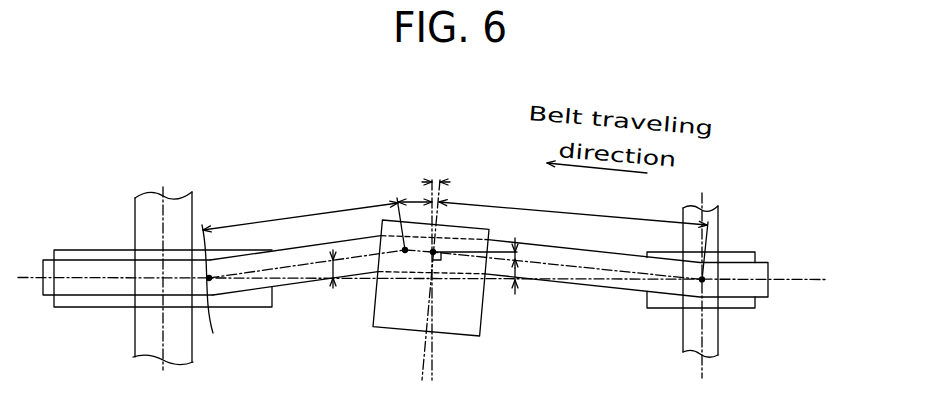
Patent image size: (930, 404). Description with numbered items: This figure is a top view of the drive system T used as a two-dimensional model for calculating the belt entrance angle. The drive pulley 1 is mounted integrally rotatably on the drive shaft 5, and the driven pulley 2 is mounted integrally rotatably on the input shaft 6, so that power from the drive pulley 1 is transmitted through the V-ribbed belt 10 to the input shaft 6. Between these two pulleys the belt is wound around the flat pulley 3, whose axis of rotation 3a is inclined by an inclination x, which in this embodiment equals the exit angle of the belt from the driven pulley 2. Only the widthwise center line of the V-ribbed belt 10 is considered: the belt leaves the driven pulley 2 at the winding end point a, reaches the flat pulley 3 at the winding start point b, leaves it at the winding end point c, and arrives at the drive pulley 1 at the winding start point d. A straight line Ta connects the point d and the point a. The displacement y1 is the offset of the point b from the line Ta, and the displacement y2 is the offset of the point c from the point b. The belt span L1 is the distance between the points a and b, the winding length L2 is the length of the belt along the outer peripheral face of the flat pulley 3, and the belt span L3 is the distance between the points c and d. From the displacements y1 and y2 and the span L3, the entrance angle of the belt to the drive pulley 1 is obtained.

The drive pulley 1 is at (80, 257).
The driven pulley 2 is at (742, 254).
The flat pulley 3 is at (470, 322).
The axis of rotation 3a is at (440, 200).
The drive shaft 5 is at (143, 225).
The input shaft 6 is at (711, 354).
The V-ribbed belt 10 is at (632, 292).
The drive system T is at (225, 170).
The straight line Ta is at (800, 279).
The winding end point at driven pulley a is at (703, 281).
The winding start point at flat pulley b is at (433, 252).
The winding end point at flat pulley c is at (405, 250).
The winding start point at drive pulley d is at (212, 296).
The belt span L1 is at (573, 207).
The winding length L2 is at (425, 200).
The belt span L3 is at (300, 211).
The inclination x is at (433, 177).
The displacement y1 is at (517, 273).
The displacement y2 is at (518, 250).